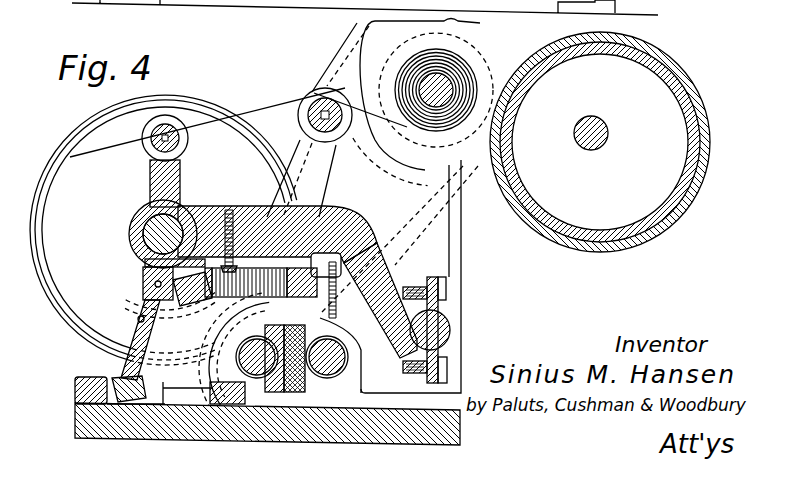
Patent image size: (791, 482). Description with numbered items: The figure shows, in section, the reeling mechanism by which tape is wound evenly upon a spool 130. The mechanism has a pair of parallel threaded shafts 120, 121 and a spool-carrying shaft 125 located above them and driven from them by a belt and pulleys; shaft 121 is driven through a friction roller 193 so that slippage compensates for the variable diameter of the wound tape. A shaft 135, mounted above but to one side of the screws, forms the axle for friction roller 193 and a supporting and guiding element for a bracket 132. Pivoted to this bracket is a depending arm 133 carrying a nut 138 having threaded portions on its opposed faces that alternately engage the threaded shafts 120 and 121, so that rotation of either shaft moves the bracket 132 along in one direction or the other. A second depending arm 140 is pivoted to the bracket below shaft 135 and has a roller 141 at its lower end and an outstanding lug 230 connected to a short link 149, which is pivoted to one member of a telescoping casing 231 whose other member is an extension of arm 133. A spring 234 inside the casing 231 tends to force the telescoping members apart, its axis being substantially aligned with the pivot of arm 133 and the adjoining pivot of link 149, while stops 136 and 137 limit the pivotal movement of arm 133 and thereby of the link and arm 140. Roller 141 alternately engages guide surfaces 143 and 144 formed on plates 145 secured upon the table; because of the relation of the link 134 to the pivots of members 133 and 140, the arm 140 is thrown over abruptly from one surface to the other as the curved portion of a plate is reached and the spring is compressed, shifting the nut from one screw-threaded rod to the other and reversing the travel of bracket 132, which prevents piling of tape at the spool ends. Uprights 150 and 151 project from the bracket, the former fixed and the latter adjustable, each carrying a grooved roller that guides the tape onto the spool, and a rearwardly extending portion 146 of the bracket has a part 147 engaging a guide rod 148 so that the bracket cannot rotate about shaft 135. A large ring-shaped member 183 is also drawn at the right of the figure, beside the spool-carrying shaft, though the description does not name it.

The threaded shaft 120 is at (342, 366).
The threaded shaft 121 is at (245, 322).
The spool-carrying shaft 125 is at (446, 88).
The spool 130 is at (374, 57).
The bracket 132 is at (352, 232).
The depending arm 133 is at (310, 332).
The link 134 is at (172, 303).
The shaft 135 is at (129, 234).
The stop 136 is at (225, 216).
The stop 137 is at (373, 265).
The nut 138 is at (300, 389).
The depending arm 140 is at (145, 322).
The roller 141 is at (110, 388).
The guide surface 143 is at (113, 392).
The guide surface 144 is at (210, 392).
The plate 145 is at (77, 390).
The rearwardly extending portion 146 is at (445, 263).
The part 147 is at (449, 289).
The guide rod 148 is at (447, 328).
The short link 149 is at (240, 338).
The upright 150 is at (149, 183).
The upright 151 is at (318, 172).
The ring 183 is at (690, 69).
The friction roller 193 is at (203, 112).
The outstanding lug 230 is at (139, 317).
The telescoping casing 231 is at (146, 263).
The spring 234 is at (243, 268).